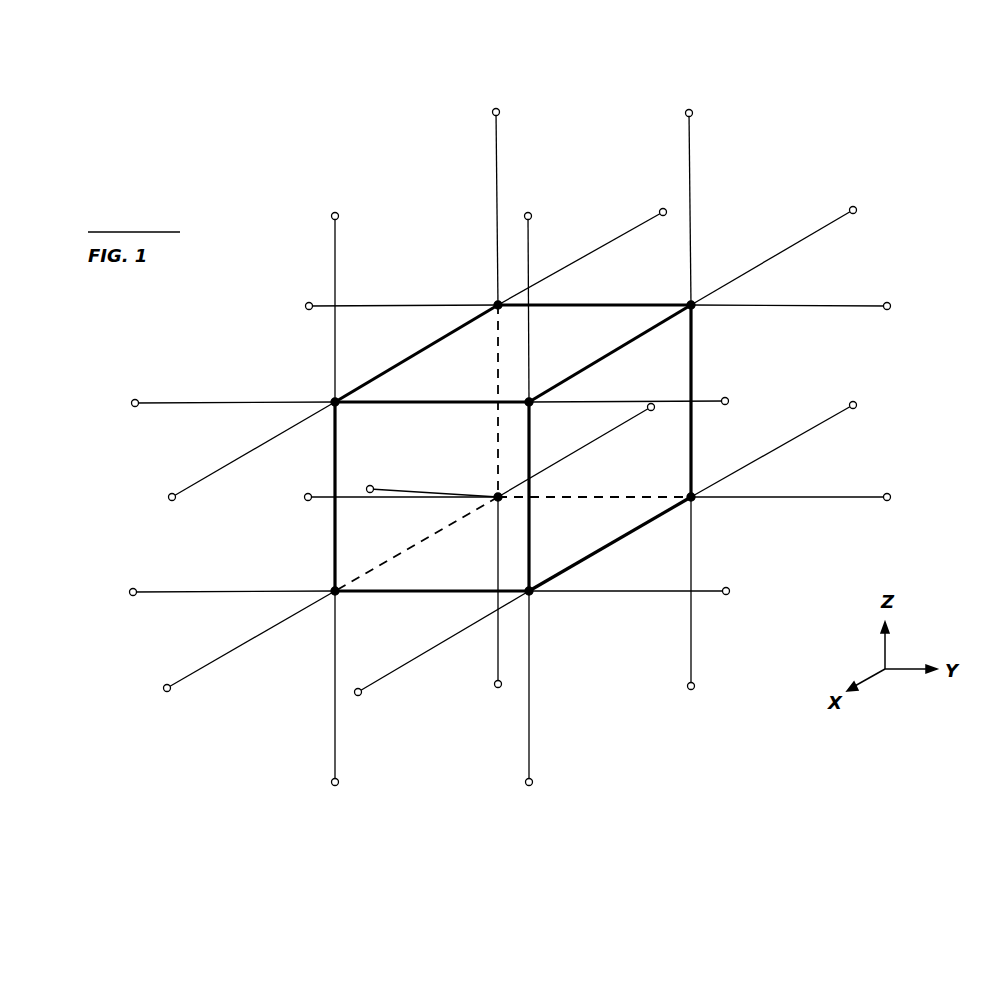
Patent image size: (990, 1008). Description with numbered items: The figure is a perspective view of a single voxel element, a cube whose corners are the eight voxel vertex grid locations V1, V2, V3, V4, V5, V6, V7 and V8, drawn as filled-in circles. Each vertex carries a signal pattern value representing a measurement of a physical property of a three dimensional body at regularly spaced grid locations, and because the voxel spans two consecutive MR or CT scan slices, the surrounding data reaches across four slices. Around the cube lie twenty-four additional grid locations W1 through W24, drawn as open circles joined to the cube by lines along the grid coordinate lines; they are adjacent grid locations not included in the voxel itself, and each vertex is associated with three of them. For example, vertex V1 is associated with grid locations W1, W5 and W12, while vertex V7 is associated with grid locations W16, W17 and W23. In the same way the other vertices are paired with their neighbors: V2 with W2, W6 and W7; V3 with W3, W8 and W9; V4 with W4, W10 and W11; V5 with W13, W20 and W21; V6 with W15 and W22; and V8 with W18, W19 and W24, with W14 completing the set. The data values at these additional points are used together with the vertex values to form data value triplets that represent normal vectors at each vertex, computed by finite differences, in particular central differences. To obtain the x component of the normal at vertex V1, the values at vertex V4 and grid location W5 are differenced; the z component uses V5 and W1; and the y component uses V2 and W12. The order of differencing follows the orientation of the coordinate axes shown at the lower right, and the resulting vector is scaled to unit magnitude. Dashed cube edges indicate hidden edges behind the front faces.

The adjacent grid location W1 is at (336, 702).
The adjacent grid location W2 is at (533, 703).
The adjacent grid location W3 is at (699, 608).
The adjacent grid location W4 is at (498, 607).
The adjacent grid location W5 is at (239, 656).
The adjacent grid location W6 is at (440, 657).
The adjacent grid location W7 is at (652, 594).
The adjacent grid location W8 is at (813, 496).
The adjacent grid location W9 is at (796, 445).
The adjacent grid location W10 is at (591, 451).
The adjacent grid location W11 is at (381, 497).
The adjacent grid location W12 is at (207, 595).
The adjacent grid location W13 is at (224, 455).
The adjacent grid location W14 is at (421, 478).
The adjacent grid location W15 is at (657, 402).
The adjacent grid location W16 is at (818, 307).
The adjacent grid location W17 is at (785, 244).
The adjacent grid location W18 is at (590, 244).
The adjacent grid location W19 is at (378, 307).
The adjacent grid location W20 is at (207, 403).
The adjacent grid location W21 is at (328, 292).
The adjacent grid location W22 is at (532, 292).
The adjacent grid location W23 is at (685, 196).
The adjacent grid location W24 is at (492, 196).
The voxel vertex V1 is at (350, 603).
The voxel vertex V2 is at (546, 604).
The voxel vertex V3 is at (706, 509).
The voxel vertex V4 is at (512, 509).
The voxel vertex V5 is at (350, 413).
The voxel vertex V6 is at (544, 414).
The voxel vertex V7 is at (677, 324).
The voxel vertex V8 is at (511, 319).